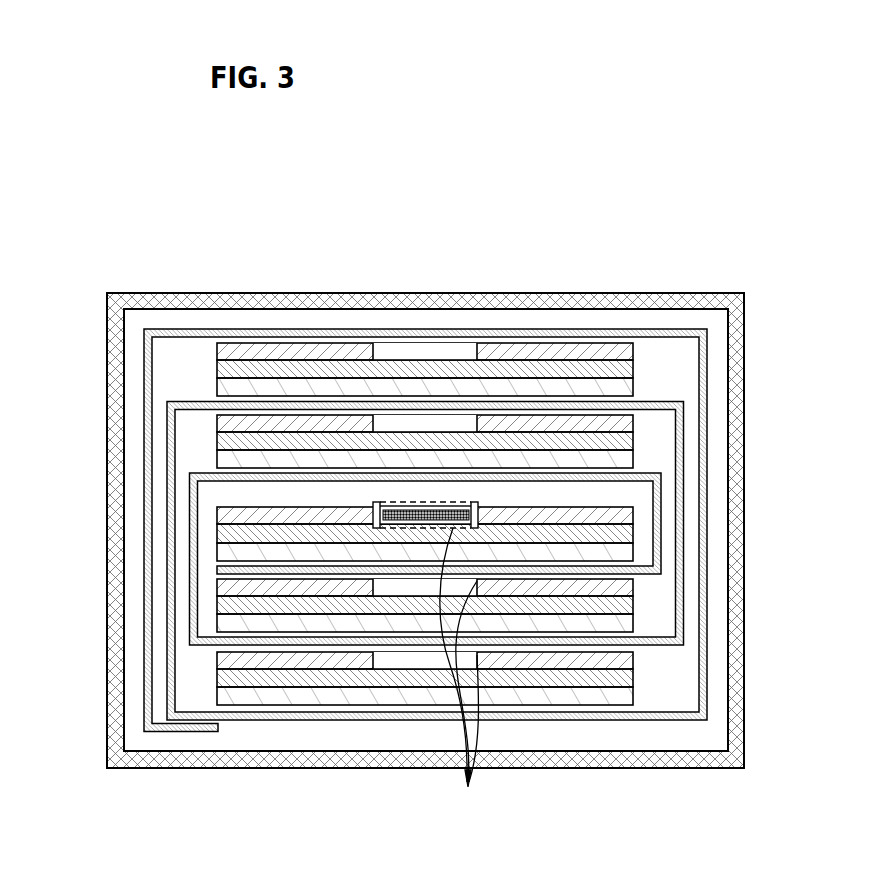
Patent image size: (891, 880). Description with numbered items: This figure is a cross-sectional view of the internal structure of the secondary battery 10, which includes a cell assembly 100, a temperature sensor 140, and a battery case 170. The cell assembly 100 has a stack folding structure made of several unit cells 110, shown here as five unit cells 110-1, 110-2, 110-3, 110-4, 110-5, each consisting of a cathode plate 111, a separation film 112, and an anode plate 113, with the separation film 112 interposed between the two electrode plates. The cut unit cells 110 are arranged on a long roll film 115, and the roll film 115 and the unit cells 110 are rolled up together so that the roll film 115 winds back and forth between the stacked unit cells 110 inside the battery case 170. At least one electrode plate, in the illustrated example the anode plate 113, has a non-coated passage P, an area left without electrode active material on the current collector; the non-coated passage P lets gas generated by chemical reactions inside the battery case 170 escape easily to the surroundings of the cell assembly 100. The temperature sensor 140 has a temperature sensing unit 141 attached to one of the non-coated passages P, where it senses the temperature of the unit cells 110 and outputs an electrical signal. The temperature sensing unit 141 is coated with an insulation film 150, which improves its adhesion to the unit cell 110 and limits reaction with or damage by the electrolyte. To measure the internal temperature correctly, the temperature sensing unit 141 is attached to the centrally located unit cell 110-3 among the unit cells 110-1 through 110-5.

The secondary battery 10 is at (171, 249).
The cell assembly 100 is at (438, 524).
The unit cell 110 is at (320, 532).
The first unit cell 110-1 is at (633, 343).
The second unit cell 110-2 is at (633, 415).
The third unit cell 110-3 is at (411, 526).
The fourth unit cell 110-4 is at (633, 579).
The fifth unit cell 110-5 is at (516, 678).
The cathode plate 111 is at (217, 552).
The separation film 112 is at (217, 534).
The anode plate 113 is at (217, 514).
The roll film 115 is at (147, 632).
The temperature sensor 140 is at (447, 505).
The temperature sensing unit 141 is at (375, 505).
The insulation film 150 is at (475, 521).
The battery case 170 is at (108, 690).
The non-coated passage P is at (459, 670).